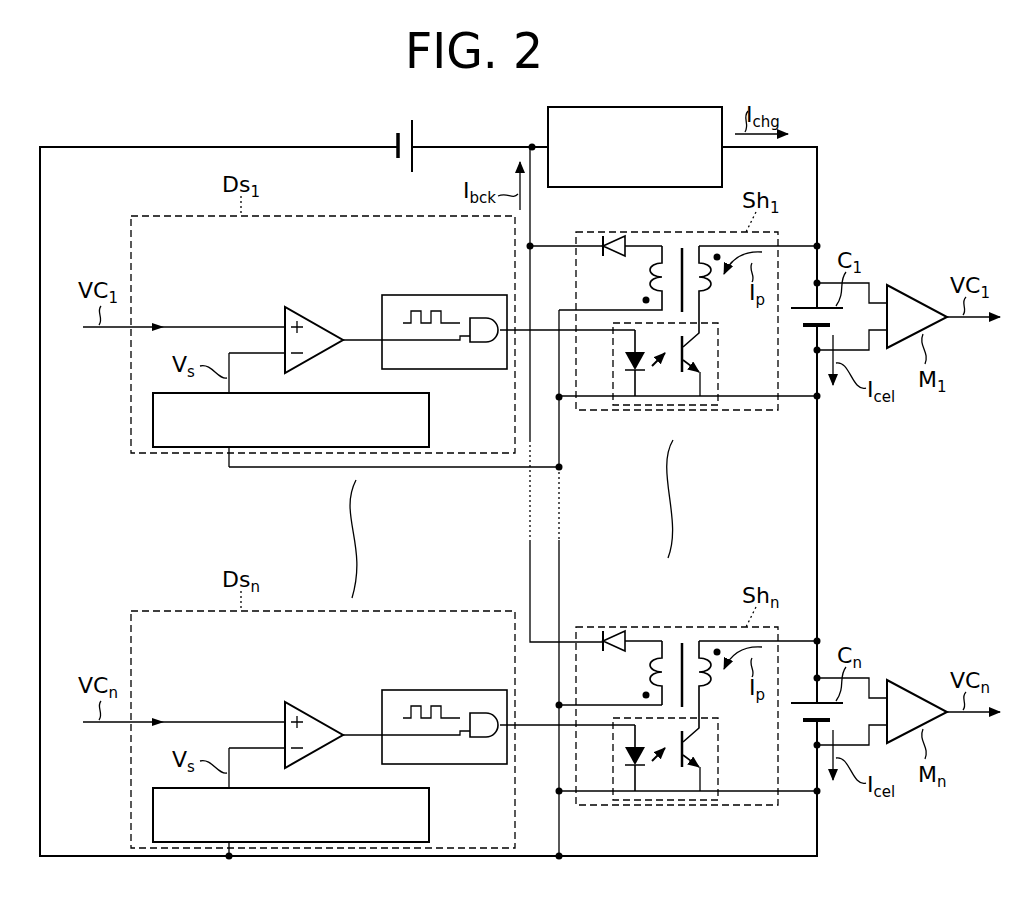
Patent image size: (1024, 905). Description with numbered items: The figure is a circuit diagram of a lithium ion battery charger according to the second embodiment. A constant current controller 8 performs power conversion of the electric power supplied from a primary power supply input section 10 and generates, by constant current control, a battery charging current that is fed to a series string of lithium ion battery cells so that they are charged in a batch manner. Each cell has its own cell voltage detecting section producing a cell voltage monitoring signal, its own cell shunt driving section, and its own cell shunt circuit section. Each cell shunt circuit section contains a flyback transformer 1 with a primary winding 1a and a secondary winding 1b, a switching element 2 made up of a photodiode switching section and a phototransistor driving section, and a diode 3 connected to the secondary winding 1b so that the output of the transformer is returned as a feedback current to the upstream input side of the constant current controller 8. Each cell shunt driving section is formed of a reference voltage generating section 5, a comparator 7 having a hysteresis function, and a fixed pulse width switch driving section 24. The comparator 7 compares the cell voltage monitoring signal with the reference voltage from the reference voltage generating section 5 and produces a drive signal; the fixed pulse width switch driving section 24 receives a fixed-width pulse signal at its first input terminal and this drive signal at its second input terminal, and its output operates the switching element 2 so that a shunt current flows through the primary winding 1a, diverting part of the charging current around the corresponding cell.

The flyback transformer 1 is at (684, 232).
The primary winding 1a is at (708, 286).
The secondary winding 1b is at (661, 232).
The switching element 2 is at (720, 370).
The diode 3 is at (611, 258).
The reference voltage generating section 5 is at (431, 432).
The comparator 7 is at (323, 324).
The constant current controller 8 is at (547, 122).
The primary power supply input section 10 is at (398, 130).
The fixed pulse width switch driving section 24 is at (447, 295).